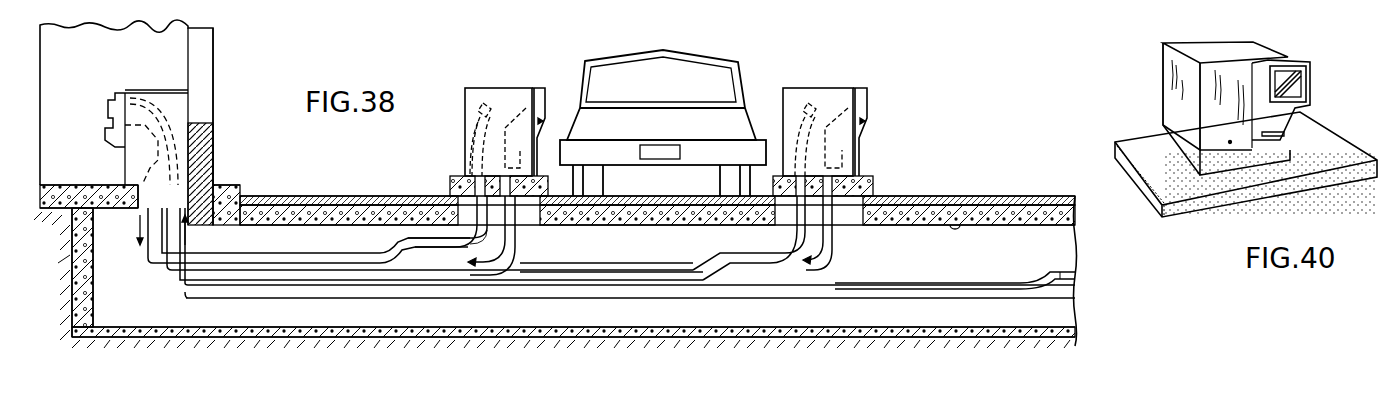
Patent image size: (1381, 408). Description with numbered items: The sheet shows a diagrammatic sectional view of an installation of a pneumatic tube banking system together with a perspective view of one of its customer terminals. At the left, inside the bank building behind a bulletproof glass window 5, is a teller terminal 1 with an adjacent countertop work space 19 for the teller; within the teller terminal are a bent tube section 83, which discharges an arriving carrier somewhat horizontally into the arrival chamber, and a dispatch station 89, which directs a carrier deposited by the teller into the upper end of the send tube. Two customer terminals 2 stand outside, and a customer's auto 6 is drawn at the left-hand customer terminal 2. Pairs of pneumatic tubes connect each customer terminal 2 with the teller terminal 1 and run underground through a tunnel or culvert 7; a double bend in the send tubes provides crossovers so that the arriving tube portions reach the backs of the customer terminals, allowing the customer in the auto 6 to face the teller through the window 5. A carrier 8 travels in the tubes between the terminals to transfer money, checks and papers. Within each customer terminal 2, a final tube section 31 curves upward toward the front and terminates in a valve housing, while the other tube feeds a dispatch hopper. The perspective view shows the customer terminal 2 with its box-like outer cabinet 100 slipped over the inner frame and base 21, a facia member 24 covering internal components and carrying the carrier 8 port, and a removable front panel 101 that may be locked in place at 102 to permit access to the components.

In FIG. 38, the teller terminal 1 is at (110, 112).
In FIG. 40, the customer terminal 2 is at (1158, 78).
In FIG. 38, the teller bulletproof glass window 5 is at (216, 22).
In FIG. 38, the customer's auto 6 is at (700, 54).
In FIG. 38, the tunnel or culvert 7 is at (953, 226).
In FIG. 40, the carrier 8 is at (1299, 80).
In FIG. 38, the countertop work space 19 is at (165, 87).
In FIG. 40, the base 21 is at (1220, 165).
In FIG. 40, the facia member 24 is at (1300, 110).
In FIG. 38, the final section of tube 4 31 is at (472, 128).
In FIG. 38, the tube section 83 is at (165, 108).
In FIG. 38, the dispatch station 89 is at (138, 165).
In FIG. 40, the box-like cabinet structure 100 is at (1172, 113).
In FIG. 40, the removable front panel 101 is at (1226, 70).
In FIG. 40, the lock 102 is at (1232, 143).